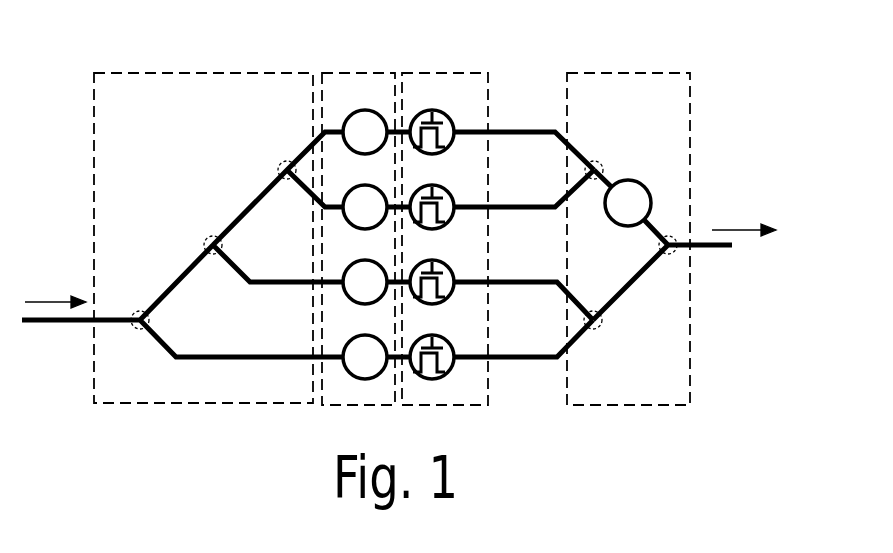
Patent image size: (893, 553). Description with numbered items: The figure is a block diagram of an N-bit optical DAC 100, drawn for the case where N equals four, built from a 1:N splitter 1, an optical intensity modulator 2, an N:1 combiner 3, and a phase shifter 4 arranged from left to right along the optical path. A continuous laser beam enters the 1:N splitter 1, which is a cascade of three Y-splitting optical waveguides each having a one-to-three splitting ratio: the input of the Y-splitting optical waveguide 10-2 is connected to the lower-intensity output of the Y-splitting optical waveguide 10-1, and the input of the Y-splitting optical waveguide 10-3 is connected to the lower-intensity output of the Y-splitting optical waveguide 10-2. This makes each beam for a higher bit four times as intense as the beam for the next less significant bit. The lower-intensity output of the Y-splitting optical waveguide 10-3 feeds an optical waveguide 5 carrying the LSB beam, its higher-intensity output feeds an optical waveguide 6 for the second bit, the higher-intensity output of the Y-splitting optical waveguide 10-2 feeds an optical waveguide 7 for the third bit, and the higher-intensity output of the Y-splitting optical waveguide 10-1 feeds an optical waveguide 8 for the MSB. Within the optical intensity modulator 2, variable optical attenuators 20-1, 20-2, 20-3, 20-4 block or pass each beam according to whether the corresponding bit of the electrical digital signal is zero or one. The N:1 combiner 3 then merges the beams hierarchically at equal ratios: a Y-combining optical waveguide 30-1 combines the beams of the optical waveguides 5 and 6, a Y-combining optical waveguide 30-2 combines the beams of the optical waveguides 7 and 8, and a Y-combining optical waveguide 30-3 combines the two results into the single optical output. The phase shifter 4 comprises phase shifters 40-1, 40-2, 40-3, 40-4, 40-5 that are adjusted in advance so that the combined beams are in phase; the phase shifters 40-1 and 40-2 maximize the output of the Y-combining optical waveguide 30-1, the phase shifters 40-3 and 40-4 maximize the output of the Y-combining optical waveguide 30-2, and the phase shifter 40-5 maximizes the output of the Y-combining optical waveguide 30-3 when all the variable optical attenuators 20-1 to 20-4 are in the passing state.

The N-bit optical DAC 100 is at (413, 29).
The 1:N splitter 1 is at (158, 74).
The optical intensity modulator 2 is at (415, 74).
The N:1 combiner 3 is at (594, 74).
The phase shifter 4 is at (345, 74).
The Y-splitting optical waveguide 10-1 is at (150, 323).
The Y-splitting optical waveguide 10-2 is at (208, 239).
The Y-splitting optical waveguide 10-3 is at (280, 161).
The variable optical attenuator 20-1 is at (425, 111).
The variable optical attenuator 20-2 is at (425, 186).
The variable optical attenuator 20-3 is at (425, 266).
The variable optical attenuator 20-4 is at (425, 341).
The Y-combining optical waveguide 30-1 is at (602, 166).
The Y-combining optical waveguide 30-2 is at (597, 331).
The Y-combining optical waveguide 30-3 is at (658, 246).
The phase shifter 40-1 is at (350, 112).
The phase shifter 40-2 is at (350, 187).
The phase shifter 40-3 is at (350, 269).
The phase shifter 40-4 is at (350, 344).
The phase shifter 40-5 is at (630, 179).
The optical waveguide 5 is at (506, 128).
The optical waveguide 6 is at (506, 203).
The optical waveguide 7 is at (522, 279).
The optical waveguide 8 is at (522, 354).